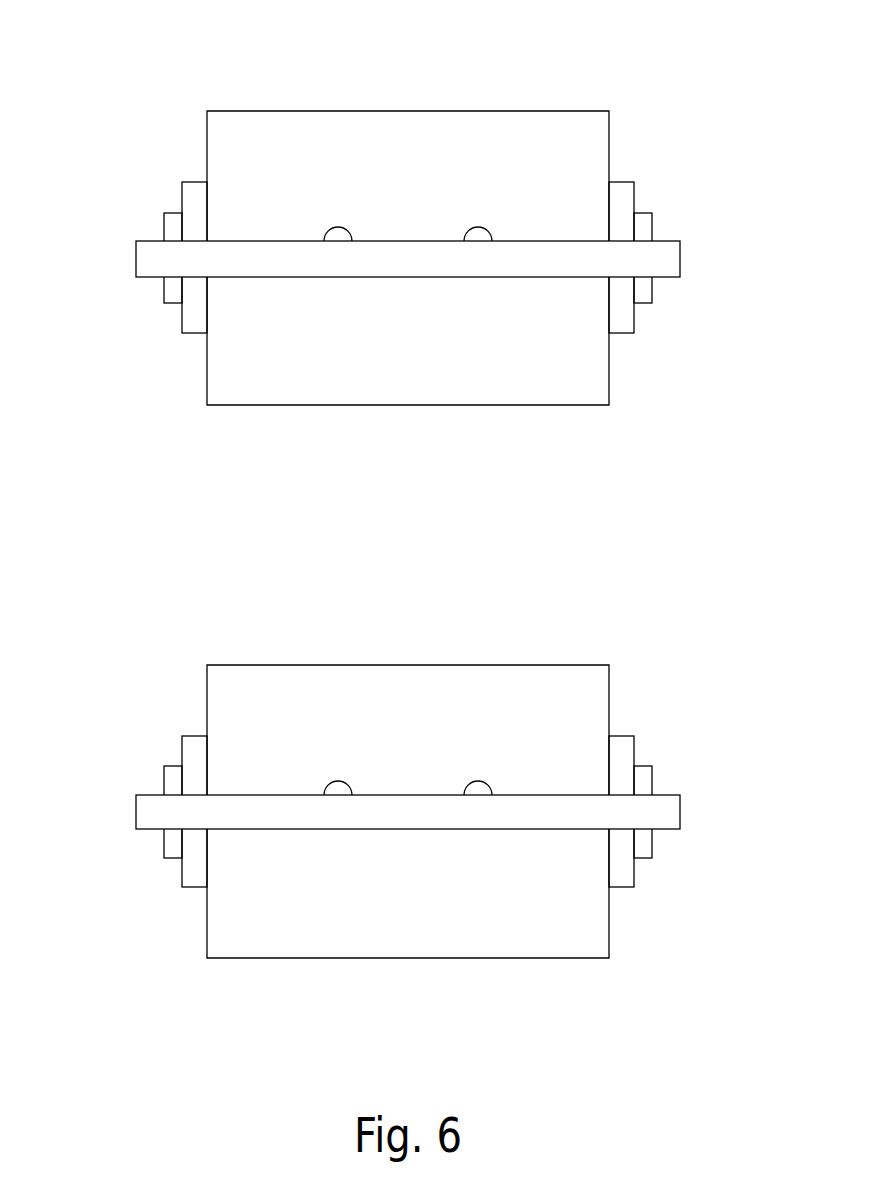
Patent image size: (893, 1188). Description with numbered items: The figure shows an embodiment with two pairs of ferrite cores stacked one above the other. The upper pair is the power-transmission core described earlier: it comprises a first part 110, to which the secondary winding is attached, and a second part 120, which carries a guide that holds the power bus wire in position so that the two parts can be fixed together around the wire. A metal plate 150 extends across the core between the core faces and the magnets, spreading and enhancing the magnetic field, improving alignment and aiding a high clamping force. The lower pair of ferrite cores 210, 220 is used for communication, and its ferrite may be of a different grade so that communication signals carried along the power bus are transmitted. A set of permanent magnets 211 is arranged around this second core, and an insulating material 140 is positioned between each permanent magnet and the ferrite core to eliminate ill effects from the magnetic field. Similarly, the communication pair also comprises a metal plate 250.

The first part of the ferrite core 110 is at (470, 379).
The second part of the ferrite core 120 is at (389, 137).
The metal plate 150 is at (175, 261).
The insulating material 140 is at (194, 874).
The first ferrite core of the second pair 210 is at (469, 932).
The second ferrite core of the second pair 220 is at (389, 689).
The permanent magnets 211 is at (643, 778).
The metal plate 250 is at (640, 813).